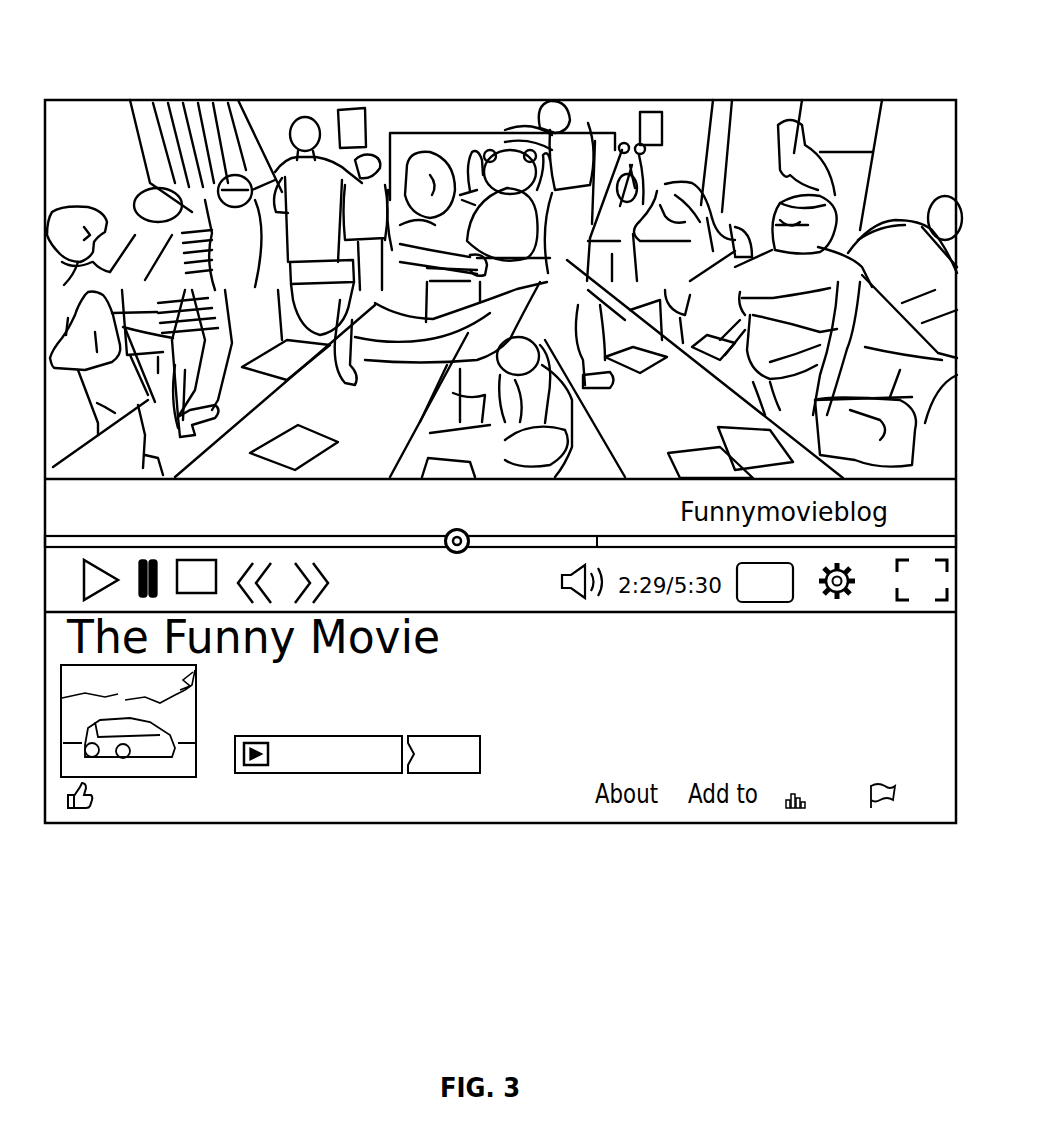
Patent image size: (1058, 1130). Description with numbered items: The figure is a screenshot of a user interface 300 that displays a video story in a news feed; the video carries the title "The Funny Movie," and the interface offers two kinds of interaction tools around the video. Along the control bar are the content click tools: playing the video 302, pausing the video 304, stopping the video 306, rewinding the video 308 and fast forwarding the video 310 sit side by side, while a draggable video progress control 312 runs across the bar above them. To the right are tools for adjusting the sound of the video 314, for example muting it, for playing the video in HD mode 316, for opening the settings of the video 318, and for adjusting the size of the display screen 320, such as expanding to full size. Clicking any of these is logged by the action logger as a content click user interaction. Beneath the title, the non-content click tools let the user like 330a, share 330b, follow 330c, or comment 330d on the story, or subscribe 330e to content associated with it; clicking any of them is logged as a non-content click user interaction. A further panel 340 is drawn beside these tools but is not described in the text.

The user interface 300 is at (593, 92).
The playing the video tool 302 is at (100, 560).
The pausing the video tool 304 is at (147, 560).
The stopping the video tool 306 is at (193, 560).
The rewinding the video tool 308 is at (247, 560).
The fast forwarding the video tool 310 is at (302, 560).
The video progress control 312 is at (457, 530).
The adjusting the sound of the video tool 314 is at (565, 612).
The HD mode tool 316 is at (767, 612).
The settings button 318 is at (840, 612).
The adjusting the size of the display screen tool 320 is at (920, 612).
The like tool 330a is at (120, 813).
The share tool 330b is at (211, 813).
The follow tool 330c is at (301, 813).
The comment tool 330d is at (407, 813).
The subscribe tool 330e is at (480, 752).
The advertisement 340 is at (172, 720).